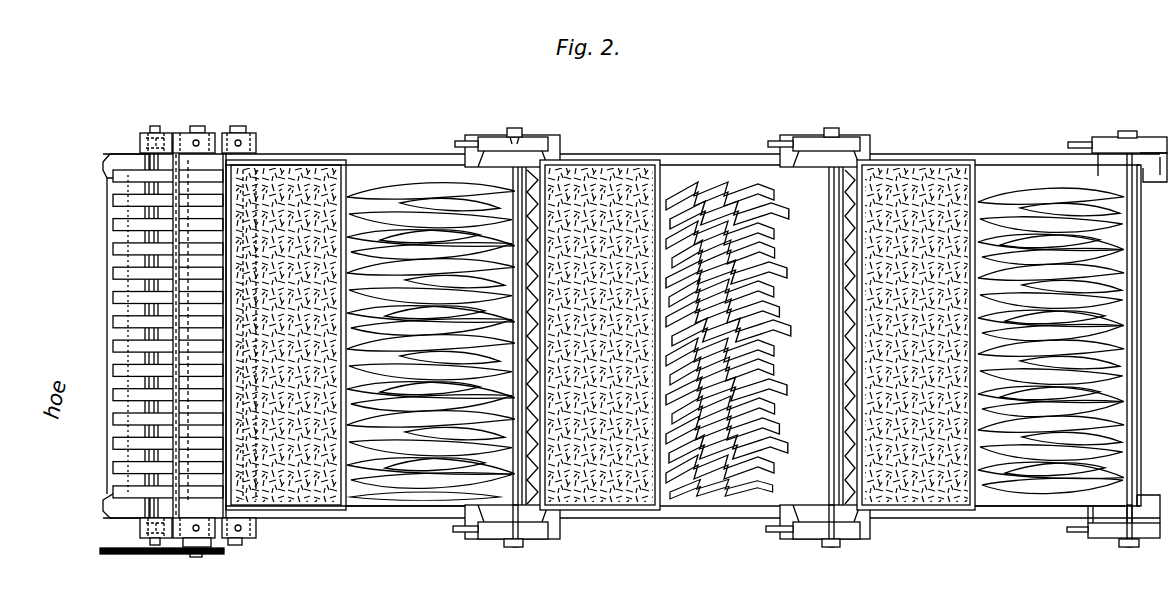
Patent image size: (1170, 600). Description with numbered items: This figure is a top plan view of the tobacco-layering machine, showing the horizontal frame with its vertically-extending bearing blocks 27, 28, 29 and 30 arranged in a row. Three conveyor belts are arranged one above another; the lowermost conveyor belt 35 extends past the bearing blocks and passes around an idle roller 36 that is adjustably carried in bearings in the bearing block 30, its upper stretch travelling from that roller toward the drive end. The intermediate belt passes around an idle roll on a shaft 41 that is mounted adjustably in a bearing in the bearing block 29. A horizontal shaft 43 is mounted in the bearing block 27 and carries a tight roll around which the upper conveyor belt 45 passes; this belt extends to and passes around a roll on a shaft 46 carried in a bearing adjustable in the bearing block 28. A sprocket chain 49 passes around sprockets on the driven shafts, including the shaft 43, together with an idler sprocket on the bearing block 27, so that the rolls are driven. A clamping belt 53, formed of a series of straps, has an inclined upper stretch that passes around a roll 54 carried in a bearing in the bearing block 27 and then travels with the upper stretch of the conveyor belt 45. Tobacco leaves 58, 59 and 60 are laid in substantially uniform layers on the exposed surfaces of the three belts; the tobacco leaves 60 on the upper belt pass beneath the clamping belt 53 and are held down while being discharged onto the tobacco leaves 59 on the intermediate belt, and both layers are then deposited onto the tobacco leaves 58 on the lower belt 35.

The bearing block 27 is at (257, 534).
The bearing block 28 is at (540, 536).
The bearing block 29 is at (800, 540).
The bearing block 30 is at (1153, 540).
The conveyor belt 35 is at (1025, 500).
The idle roller 36 is at (1124, 510).
The shaft 41 is at (832, 547).
The horizontal shaft 43 is at (203, 557).
The conveyor belt 45 is at (436, 500).
The shaft 46 is at (514, 547).
The sprocket chain 49 is at (176, 556).
The clamping belt 53 is at (113, 351).
The roll 54 is at (236, 512).
The tobacco leaves 58 is at (1006, 200).
The tobacco leaves 59 is at (704, 192).
The tobacco leaves 60 is at (408, 196).